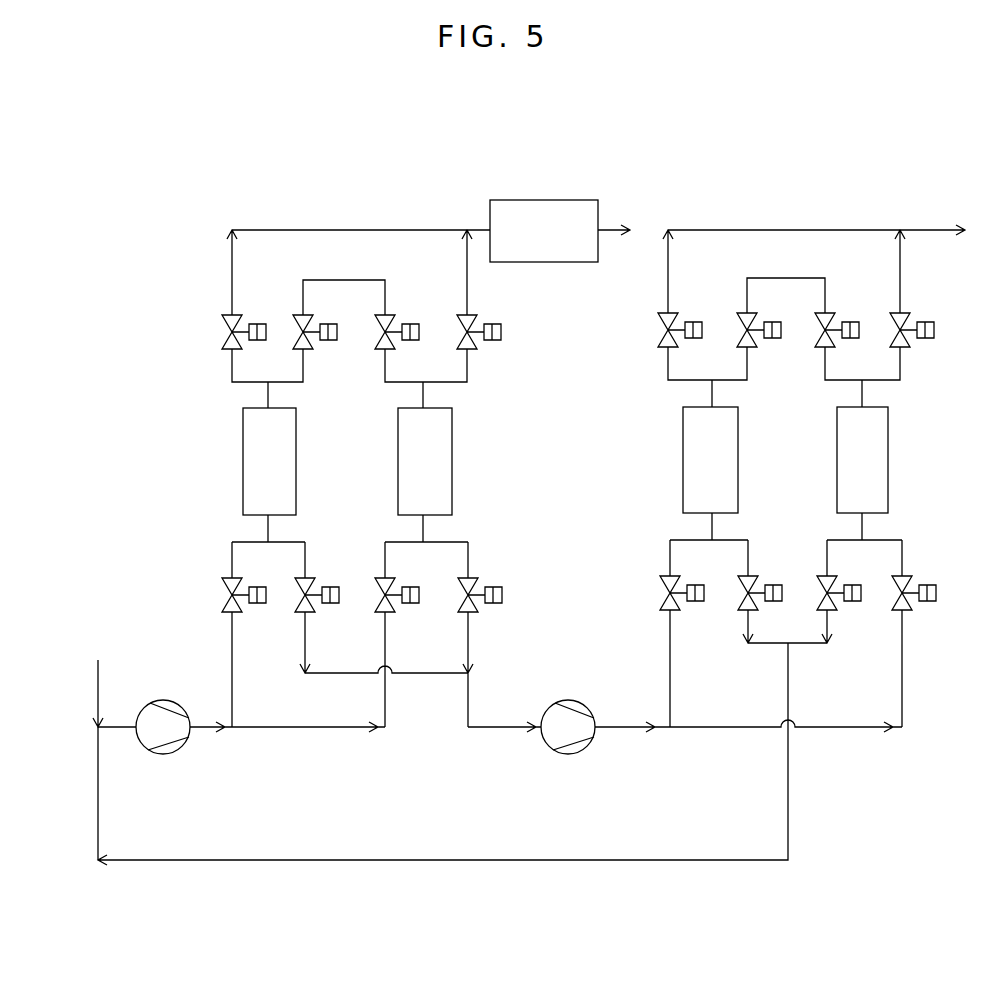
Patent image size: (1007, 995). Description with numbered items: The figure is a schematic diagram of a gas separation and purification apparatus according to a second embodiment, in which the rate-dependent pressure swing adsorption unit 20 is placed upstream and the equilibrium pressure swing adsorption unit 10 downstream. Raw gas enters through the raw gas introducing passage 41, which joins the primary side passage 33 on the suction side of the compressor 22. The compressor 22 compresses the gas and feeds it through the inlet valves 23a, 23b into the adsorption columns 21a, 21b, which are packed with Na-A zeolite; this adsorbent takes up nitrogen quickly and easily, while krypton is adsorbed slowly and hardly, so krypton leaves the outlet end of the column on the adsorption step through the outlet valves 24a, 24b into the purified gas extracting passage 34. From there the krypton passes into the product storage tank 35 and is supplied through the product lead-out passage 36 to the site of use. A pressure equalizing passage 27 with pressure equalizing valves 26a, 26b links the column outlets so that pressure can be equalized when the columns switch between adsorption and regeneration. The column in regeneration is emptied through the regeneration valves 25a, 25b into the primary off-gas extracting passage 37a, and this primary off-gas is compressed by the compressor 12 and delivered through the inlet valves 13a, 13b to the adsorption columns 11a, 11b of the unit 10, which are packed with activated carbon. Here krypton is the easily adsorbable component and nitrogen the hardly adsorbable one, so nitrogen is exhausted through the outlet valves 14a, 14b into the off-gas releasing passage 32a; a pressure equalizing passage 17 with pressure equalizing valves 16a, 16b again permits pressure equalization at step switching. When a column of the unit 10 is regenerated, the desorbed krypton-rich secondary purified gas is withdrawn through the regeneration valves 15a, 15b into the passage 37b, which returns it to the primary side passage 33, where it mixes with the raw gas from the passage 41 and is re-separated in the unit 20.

The equilibrium pressure swing adsorption unit 10 is at (940, 426).
The adsorption column 11a is at (692, 461).
The adsorption column 11b is at (884, 470).
The compressor 12 is at (583, 752).
The inlet valve 13a is at (664, 584).
The inlet valve 13b is at (908, 605).
The outlet valve 14a is at (662, 337).
The outlet valve 14b is at (910, 320).
The regeneration valve 15a is at (743, 601).
The regeneration valve 15b is at (822, 590).
The pressure equalizing valve 16a is at (744, 324).
The pressure equalizing valve 16b is at (852, 303).
The pressure equalizing passage 17 is at (790, 279).
The rate-dependent pressure swing adsorption unit 20 is at (181, 445).
The adsorption column 21a is at (243, 489).
The adsorption column 21b is at (452, 471).
The compressor 22 is at (184, 750).
The inlet valve 23a is at (228, 600).
The inlet valve 23b is at (390, 606).
The outlet valve 24a is at (226, 338).
The outlet valve 24b is at (477, 322).
The regeneration valve 25a is at (300, 601).
The regeneration valve 25b is at (474, 586).
The pressure equalizing valve 26a is at (300, 326).
The pressure equalizing valve 26b is at (389, 322).
The pressure equalizing passage 27 is at (338, 281).
The off-gas releasing passage 32a is at (922, 229).
The primary side passage 33 is at (117, 730).
The purified gas extracting passage 34 is at (488, 228).
The product storage tank 35 is at (541, 200).
The product lead-out passage 36 is at (604, 228).
The primary off-gas extracting passage 37a is at (495, 730).
The passage 37b is at (788, 794).
The raw gas introducing passage 41 is at (94, 684).